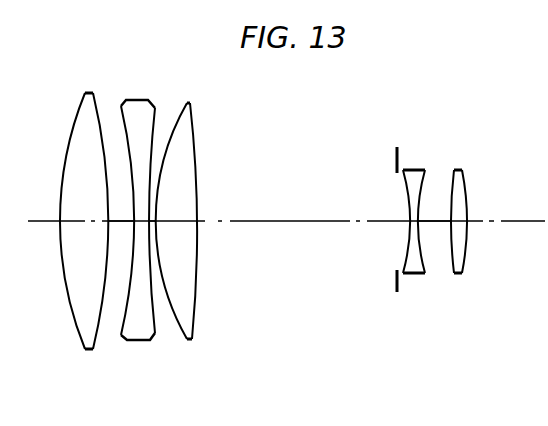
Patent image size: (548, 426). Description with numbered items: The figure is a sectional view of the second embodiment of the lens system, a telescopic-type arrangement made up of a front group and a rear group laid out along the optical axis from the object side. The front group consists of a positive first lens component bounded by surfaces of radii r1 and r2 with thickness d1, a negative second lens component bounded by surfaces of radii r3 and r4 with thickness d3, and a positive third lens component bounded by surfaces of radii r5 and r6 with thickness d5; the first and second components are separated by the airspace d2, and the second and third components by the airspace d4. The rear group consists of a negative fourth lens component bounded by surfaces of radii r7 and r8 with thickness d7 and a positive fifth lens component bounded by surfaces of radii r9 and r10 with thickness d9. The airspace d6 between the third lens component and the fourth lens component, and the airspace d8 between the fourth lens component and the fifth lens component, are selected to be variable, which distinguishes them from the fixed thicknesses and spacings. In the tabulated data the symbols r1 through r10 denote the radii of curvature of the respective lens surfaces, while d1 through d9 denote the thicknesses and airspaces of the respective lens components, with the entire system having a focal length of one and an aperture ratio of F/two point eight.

The thickness of first lens component d1 is at (69, 246).
The airspace between first and second lens components d2 is at (120, 221).
The thickness of second lens component d3 is at (136, 234).
The airspace between second and third lens components d4 is at (153, 221).
The thickness of third lens component d5 is at (195, 251).
The variable airspace between third and fourth lens components d6 is at (292, 221).
The thickness of fourth lens component d7 is at (422, 228).
The variable airspace between fourth and fifth lens components d8 is at (437, 221).
The thickness of fifth lens component d9 is at (472, 237).
The radius of curvature of first surface r1 is at (78, 334).
The radius of curvature of second surface r2 is at (97, 336).
The radius of curvature of third surface r3 is at (124, 325).
The radius of curvature of fourth surface r4 is at (156, 328).
The radius of curvature of fifth surface r5 is at (185, 323).
The radius of curvature of sixth surface r6 is at (193, 318).
The radius of curvature of seventh surface r7 is at (401, 255).
The radius of curvature of eighth surface r8 is at (426, 255).
The radius of curvature of ninth surface r9 is at (449, 262).
The radius of curvature of tenth surface r10 is at (471, 255).